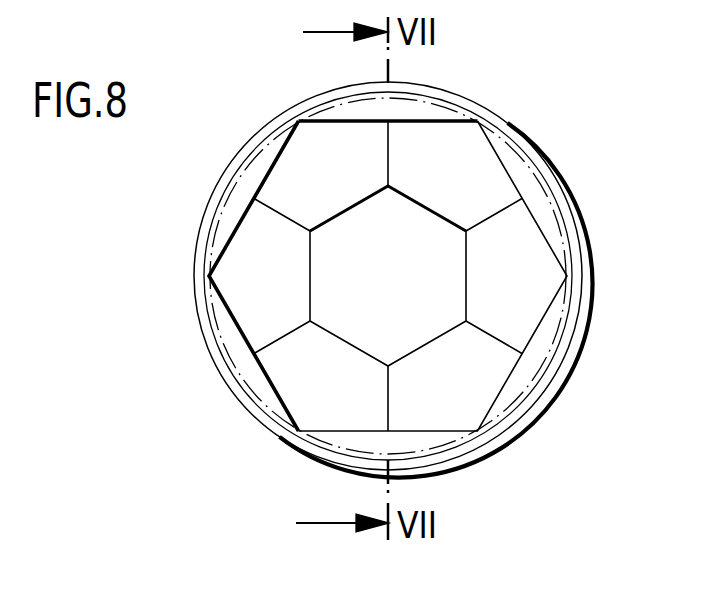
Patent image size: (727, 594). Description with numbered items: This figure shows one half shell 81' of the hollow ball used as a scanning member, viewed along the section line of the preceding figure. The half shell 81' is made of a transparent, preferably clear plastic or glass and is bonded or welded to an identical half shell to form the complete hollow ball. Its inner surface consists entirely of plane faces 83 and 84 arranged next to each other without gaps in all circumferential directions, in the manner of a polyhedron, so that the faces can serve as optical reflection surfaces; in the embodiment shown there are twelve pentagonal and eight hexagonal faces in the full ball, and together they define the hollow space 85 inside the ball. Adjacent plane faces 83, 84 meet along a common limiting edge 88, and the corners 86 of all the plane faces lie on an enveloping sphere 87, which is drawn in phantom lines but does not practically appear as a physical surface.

The half shell 81' is at (395, 264).
The plane face 83 is at (334, 174).
The plane face 84 is at (427, 256).
The hollow space 85 is at (320, 420).
The corner 86 is at (388, 187).
The enveloping sphere 87 is at (552, 369).
The common limiting edge 88 is at (343, 337).